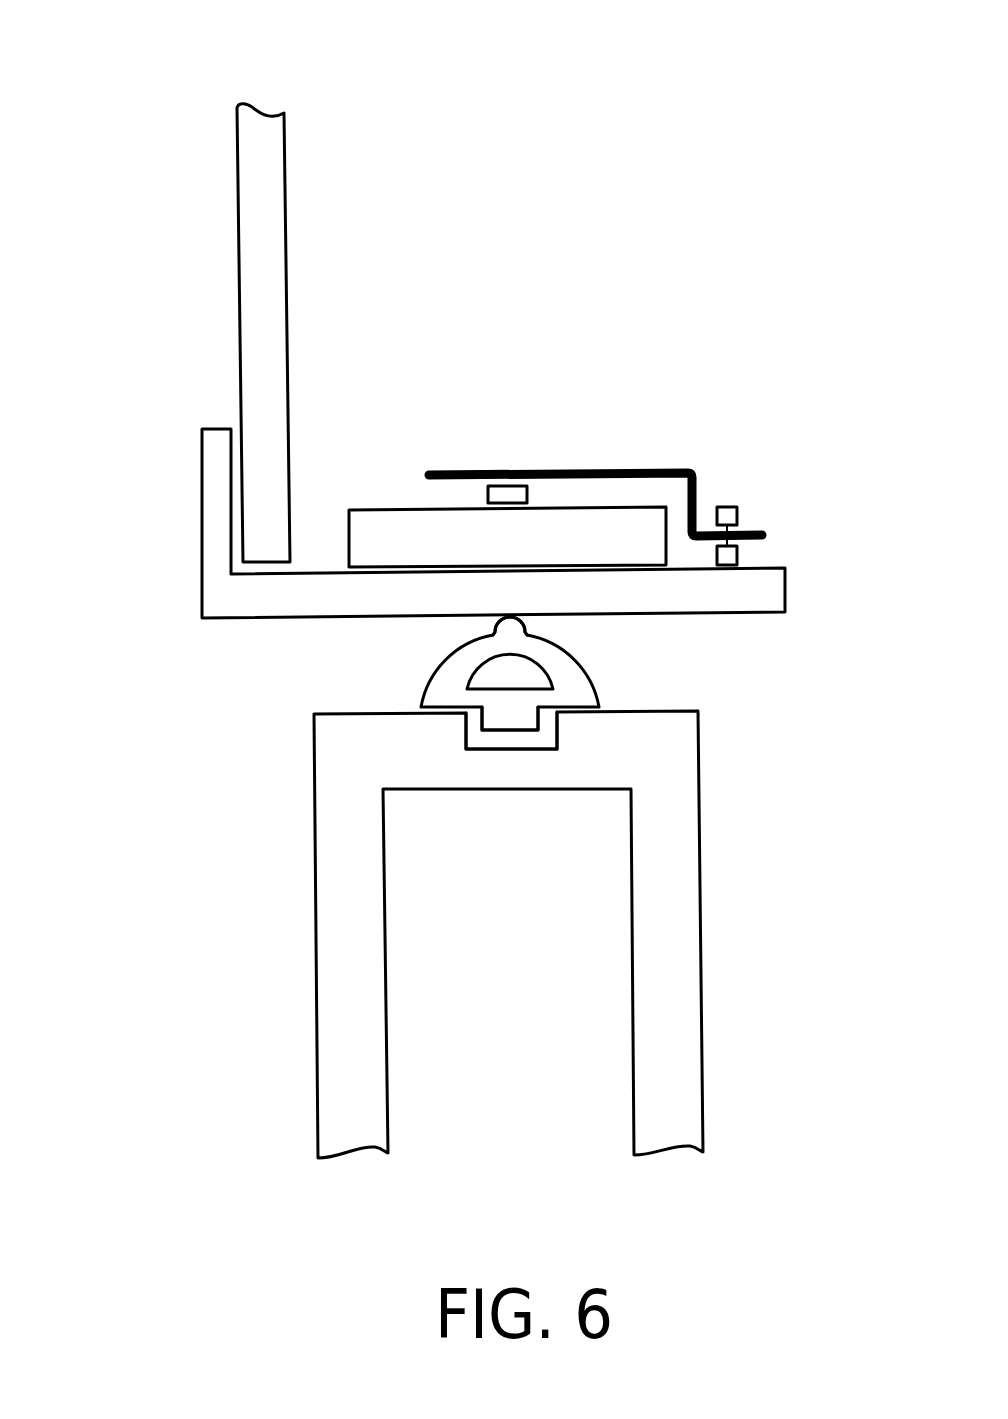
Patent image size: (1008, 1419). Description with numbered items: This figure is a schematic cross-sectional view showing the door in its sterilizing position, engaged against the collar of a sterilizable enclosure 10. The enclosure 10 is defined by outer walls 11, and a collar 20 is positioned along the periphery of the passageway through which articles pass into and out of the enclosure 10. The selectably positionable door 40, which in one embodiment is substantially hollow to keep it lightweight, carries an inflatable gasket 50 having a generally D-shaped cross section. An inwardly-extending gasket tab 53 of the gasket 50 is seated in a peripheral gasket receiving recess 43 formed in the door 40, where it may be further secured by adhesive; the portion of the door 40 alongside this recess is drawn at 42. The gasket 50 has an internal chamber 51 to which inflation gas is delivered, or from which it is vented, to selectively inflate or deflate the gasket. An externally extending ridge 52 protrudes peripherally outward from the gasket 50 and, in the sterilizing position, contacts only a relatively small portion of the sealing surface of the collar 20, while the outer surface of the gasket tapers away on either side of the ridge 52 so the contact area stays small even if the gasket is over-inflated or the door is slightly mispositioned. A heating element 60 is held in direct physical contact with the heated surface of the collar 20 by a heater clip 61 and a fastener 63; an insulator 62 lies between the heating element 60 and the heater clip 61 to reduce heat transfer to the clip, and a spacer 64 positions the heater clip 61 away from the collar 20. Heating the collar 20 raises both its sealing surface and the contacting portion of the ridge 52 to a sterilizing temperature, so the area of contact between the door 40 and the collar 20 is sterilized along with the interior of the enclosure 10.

The enclosure 10 is at (192, 61).
The outer wall 11 is at (268, 170).
The collar 20 is at (218, 472).
The door 40 is at (677, 918).
The holder leg 42 is at (600, 1108).
The gasket receiving recess 43 is at (517, 762).
The inflatable gasket 50 is at (600, 655).
The internal chamber 51 is at (506, 679).
The externally extending ridge 52 is at (478, 625).
The gasket tab 53 is at (526, 710).
The heating element 60 is at (356, 498).
The heater clip 61 is at (476, 489).
The insulator 62 is at (569, 472).
The fastener 63 is at (728, 505).
The spacer 64 is at (752, 553).